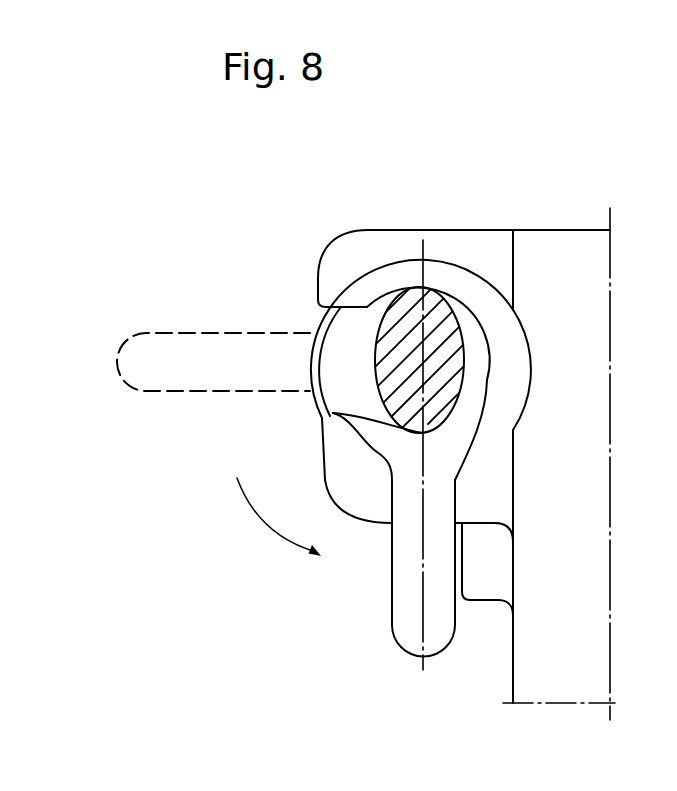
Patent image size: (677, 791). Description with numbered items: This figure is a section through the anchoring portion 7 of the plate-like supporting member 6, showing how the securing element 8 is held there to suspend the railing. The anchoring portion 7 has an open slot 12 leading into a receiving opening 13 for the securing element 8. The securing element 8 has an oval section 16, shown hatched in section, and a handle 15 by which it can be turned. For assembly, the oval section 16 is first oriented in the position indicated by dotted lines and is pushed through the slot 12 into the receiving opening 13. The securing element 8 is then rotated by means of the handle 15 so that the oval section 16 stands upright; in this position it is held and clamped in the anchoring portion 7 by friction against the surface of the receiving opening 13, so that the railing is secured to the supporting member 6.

The supporting member 6 is at (490, 686).
The anchoring portion 7 is at (424, 218).
The securing element 8 is at (383, 573).
The open slot 12 is at (348, 393).
The receiving opening 13 is at (377, 297).
The handle 15 is at (407, 632).
The oval section 16 is at (448, 330).